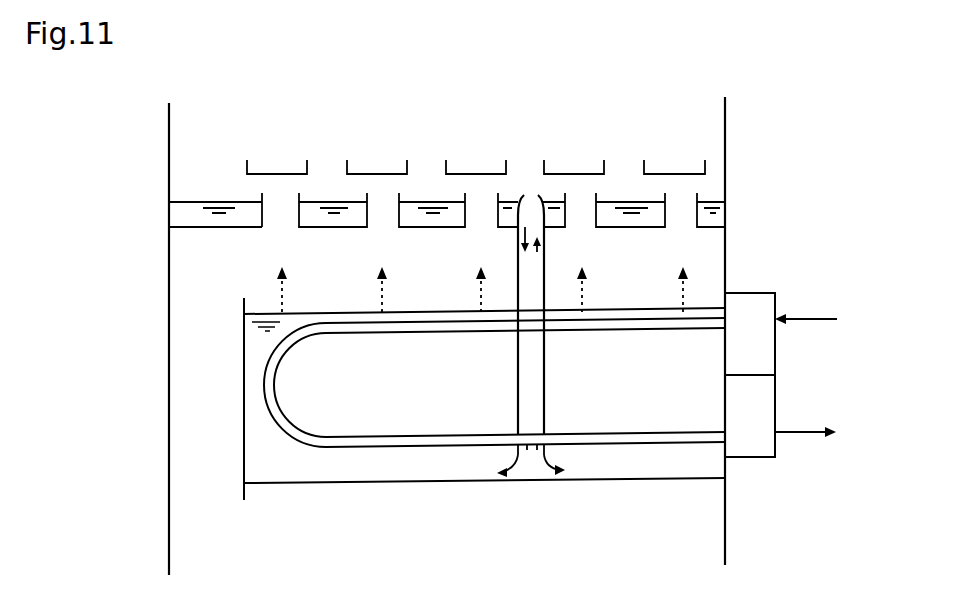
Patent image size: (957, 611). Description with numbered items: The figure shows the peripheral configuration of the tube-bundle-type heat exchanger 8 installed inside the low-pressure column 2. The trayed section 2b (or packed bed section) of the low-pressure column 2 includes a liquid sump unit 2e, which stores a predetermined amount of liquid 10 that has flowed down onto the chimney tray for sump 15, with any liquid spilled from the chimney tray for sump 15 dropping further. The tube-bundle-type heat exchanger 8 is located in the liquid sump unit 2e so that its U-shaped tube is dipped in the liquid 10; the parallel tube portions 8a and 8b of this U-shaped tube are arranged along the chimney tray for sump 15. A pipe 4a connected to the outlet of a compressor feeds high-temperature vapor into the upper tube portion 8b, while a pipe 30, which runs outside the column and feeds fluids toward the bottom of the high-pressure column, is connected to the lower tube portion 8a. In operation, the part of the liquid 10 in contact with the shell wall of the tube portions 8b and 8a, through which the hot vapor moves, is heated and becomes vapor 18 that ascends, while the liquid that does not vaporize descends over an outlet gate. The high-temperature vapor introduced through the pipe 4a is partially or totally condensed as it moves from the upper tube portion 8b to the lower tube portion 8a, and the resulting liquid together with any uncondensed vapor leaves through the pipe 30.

The low-pressure column 2 is at (166, 163).
The trayed section 2b is at (446, 108).
The liquid sump unit 2e is at (491, 395).
The pipe 4a is at (803, 322).
The tube-bundle-type heat exchanger 8 is at (747, 445).
The lower tube portion 8a is at (688, 432).
The upper tube portion 8b is at (700, 318).
The liquid 10 is at (262, 340).
The chimney tray for sump 15 is at (318, 483).
The vapor 18 is at (386, 285).
The pipe 30 is at (790, 435).